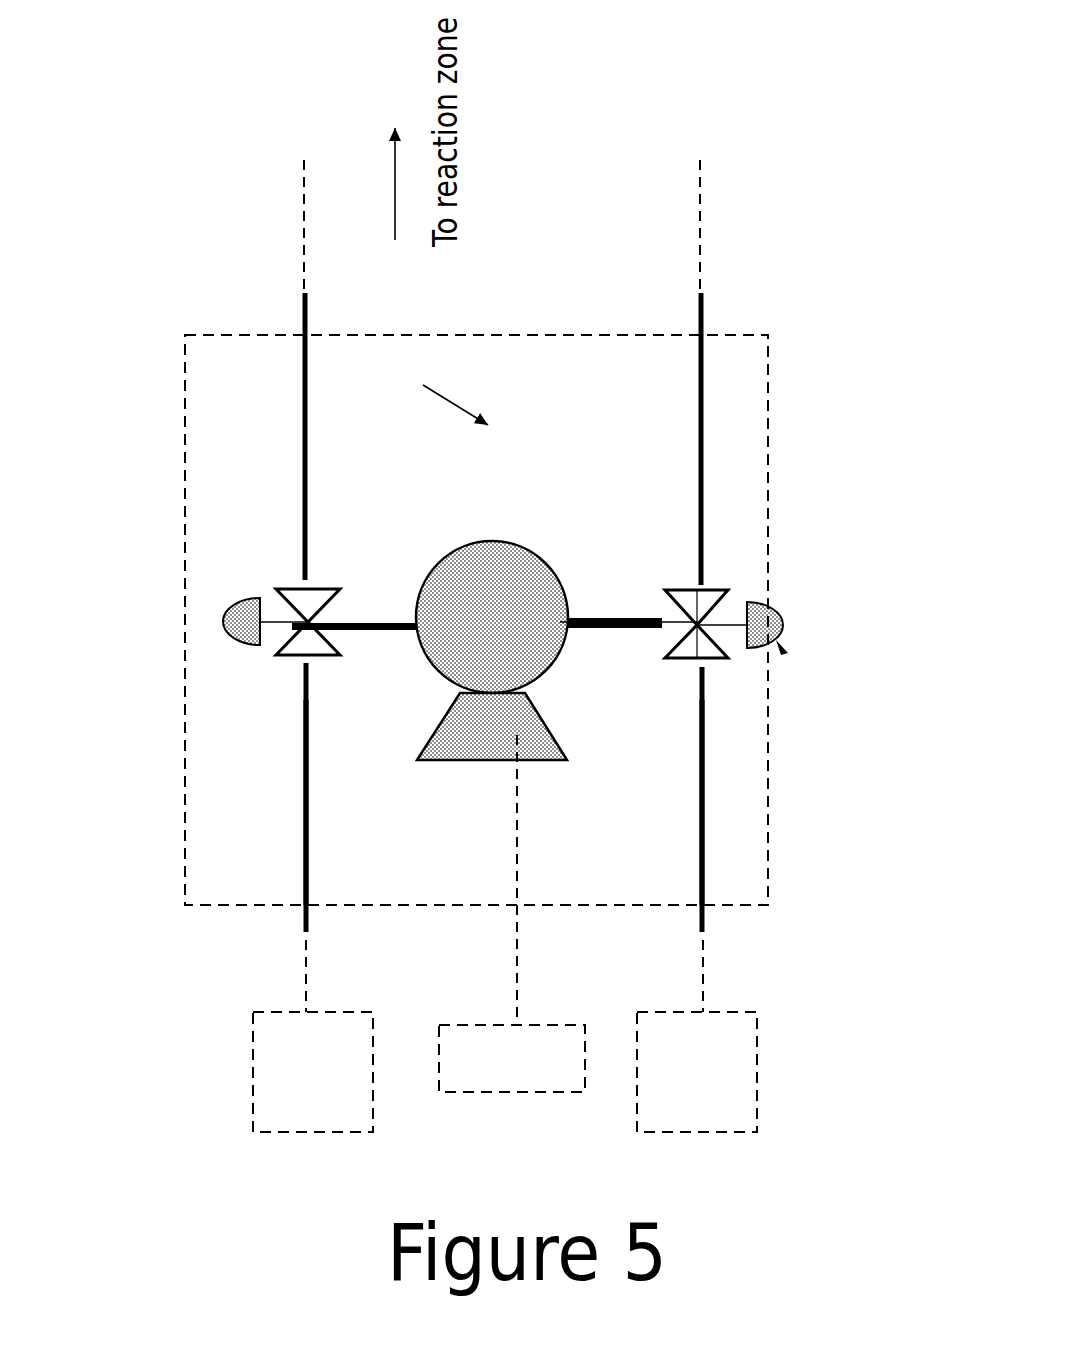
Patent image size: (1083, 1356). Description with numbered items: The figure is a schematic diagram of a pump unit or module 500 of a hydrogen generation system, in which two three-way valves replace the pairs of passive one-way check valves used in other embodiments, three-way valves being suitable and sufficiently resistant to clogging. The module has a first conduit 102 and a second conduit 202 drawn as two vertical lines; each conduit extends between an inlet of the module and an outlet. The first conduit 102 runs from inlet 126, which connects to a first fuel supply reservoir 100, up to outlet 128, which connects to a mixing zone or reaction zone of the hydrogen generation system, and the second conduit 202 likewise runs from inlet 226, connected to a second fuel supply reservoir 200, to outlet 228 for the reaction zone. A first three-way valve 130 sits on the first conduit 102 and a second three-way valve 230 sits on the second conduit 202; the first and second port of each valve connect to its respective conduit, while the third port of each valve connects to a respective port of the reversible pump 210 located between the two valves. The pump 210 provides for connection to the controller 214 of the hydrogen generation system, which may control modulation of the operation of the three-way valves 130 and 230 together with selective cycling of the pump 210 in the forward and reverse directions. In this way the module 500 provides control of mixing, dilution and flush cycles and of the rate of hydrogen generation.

The pump unit or module 500 is at (155, 439).
The first fuel supply reservoir 100 is at (313, 1036).
The first conduit 102 is at (288, 825).
The first inlet 126 is at (252, 814).
The first outlet 128 is at (258, 370).
The first three-way valve 130 is at (222, 618).
The second fuel supply reservoir 200 is at (697, 1036).
The second conduit 202 is at (708, 834).
The second inlet 226 is at (796, 815).
The second outlet 228 is at (734, 372).
The second three-way valve 230 is at (783, 610).
The reversible pump 210 is at (516, 595).
The controller 214 is at (512, 913).